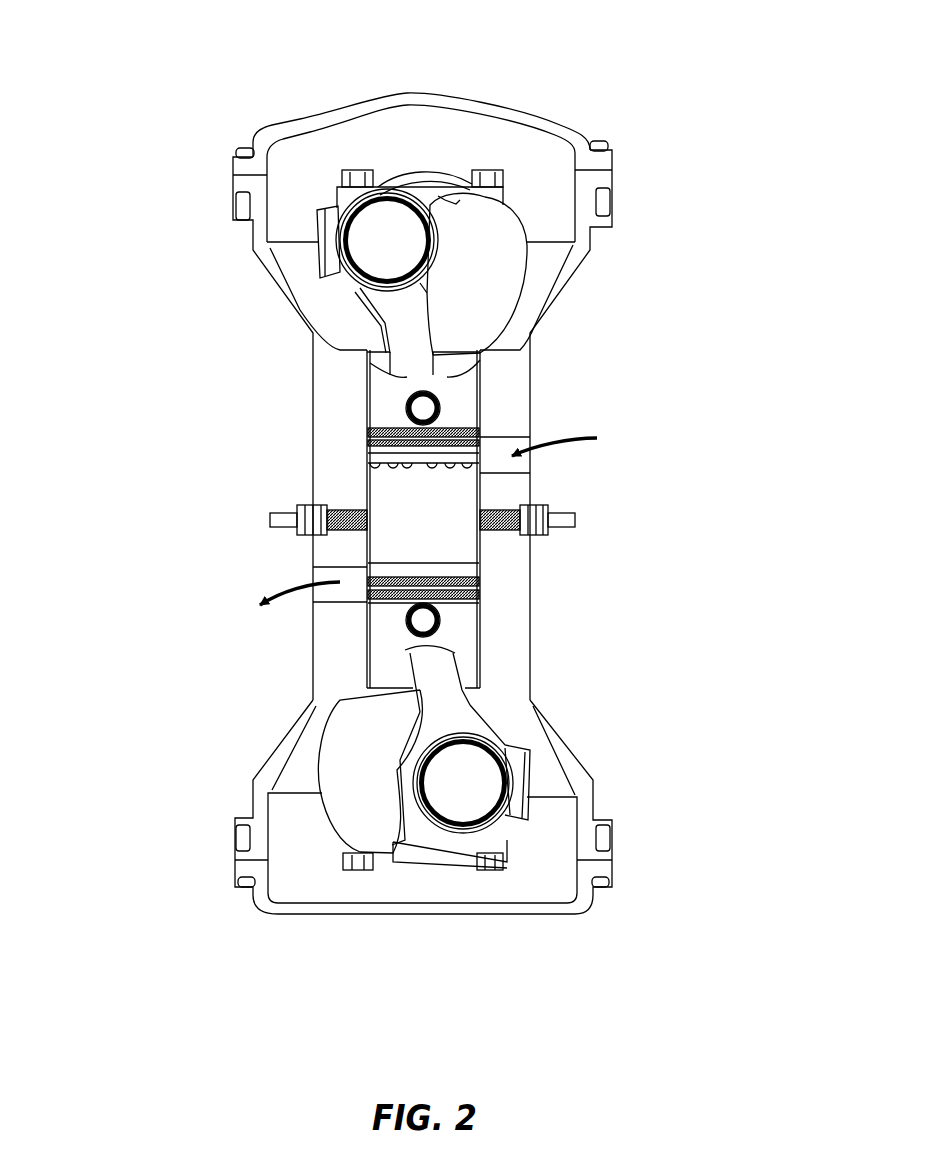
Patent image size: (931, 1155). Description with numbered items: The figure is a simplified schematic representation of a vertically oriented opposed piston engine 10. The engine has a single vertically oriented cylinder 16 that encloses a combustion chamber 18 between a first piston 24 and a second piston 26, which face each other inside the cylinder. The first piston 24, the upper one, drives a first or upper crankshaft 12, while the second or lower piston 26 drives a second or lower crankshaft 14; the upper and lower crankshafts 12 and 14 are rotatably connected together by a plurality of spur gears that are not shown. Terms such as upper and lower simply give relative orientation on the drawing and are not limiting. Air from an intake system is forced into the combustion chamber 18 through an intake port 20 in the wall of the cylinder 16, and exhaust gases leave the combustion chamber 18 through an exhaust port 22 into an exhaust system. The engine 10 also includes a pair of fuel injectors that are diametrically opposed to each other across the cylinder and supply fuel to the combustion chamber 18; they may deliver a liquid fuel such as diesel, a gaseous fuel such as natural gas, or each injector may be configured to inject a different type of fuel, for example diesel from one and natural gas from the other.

The opposed piston engine 10 is at (229, 77).
The upper crankshaft 12 is at (388, 233).
The lower crankshaft 14 is at (470, 777).
The cylinder 16 is at (513, 592).
The combustion chamber 18 is at (457, 547).
The intake port 20 is at (510, 437).
The exhaust port 22 is at (347, 603).
The first piston 24 is at (387, 397).
The second piston 26 is at (460, 628).